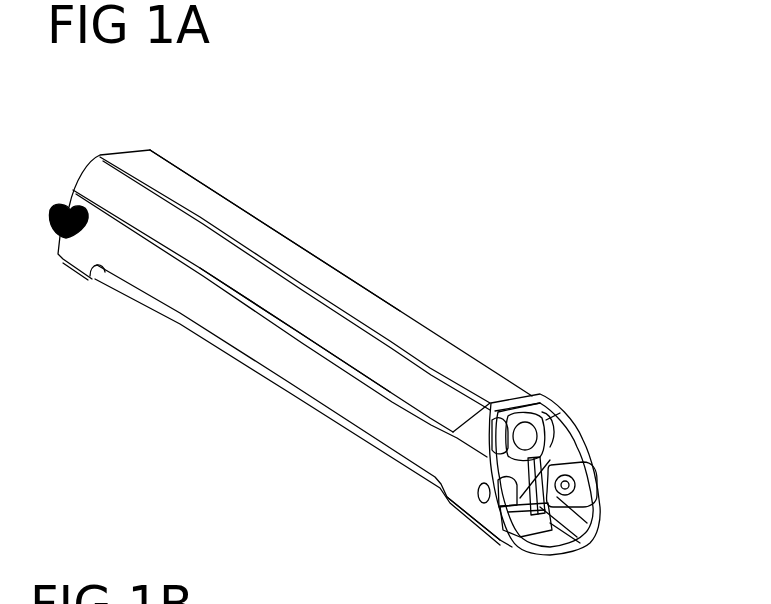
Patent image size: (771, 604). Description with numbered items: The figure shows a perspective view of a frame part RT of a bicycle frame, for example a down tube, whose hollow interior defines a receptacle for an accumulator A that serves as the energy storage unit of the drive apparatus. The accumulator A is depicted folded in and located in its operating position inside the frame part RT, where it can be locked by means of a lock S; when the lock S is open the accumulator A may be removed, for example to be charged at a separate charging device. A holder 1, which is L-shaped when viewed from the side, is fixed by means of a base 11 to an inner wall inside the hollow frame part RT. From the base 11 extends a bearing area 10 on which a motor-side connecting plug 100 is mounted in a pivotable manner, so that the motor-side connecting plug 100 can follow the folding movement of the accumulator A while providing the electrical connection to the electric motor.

The holder 1 is at (573, 430).
The bearing area 10 is at (547, 400).
The motor-side connecting plug 100 is at (517, 413).
The base 11 is at (503, 542).
The lock S is at (68, 208).
The frame part RT is at (298, 262).
The accumulator A is at (242, 357).